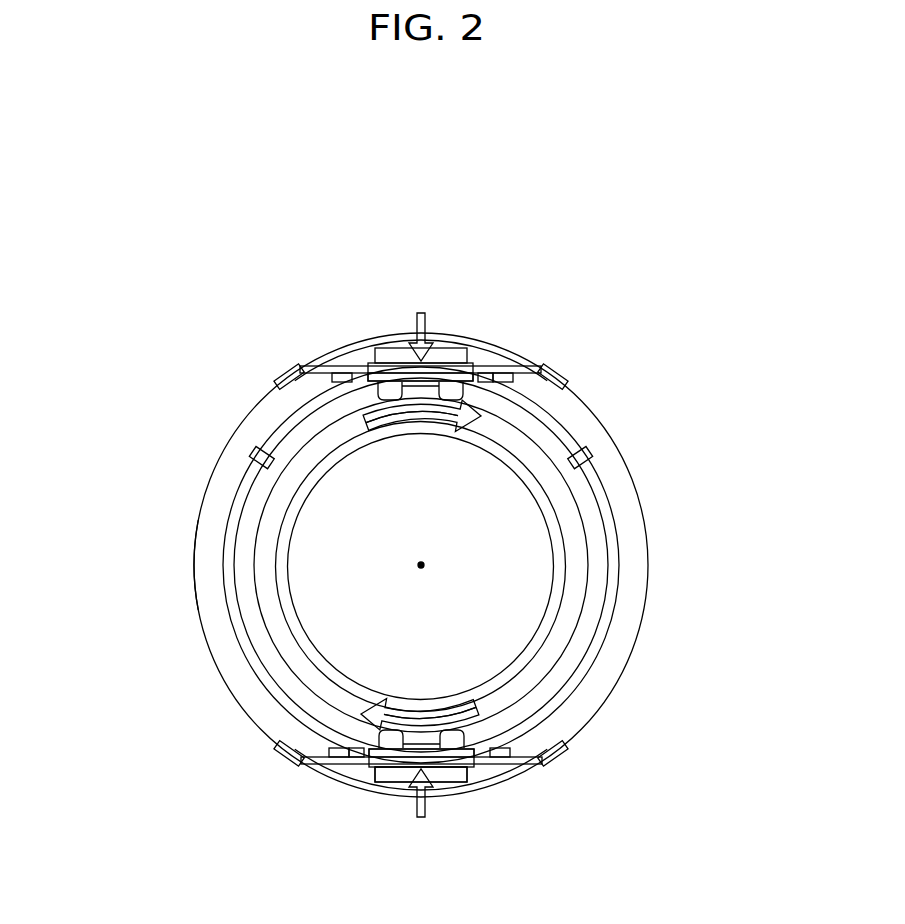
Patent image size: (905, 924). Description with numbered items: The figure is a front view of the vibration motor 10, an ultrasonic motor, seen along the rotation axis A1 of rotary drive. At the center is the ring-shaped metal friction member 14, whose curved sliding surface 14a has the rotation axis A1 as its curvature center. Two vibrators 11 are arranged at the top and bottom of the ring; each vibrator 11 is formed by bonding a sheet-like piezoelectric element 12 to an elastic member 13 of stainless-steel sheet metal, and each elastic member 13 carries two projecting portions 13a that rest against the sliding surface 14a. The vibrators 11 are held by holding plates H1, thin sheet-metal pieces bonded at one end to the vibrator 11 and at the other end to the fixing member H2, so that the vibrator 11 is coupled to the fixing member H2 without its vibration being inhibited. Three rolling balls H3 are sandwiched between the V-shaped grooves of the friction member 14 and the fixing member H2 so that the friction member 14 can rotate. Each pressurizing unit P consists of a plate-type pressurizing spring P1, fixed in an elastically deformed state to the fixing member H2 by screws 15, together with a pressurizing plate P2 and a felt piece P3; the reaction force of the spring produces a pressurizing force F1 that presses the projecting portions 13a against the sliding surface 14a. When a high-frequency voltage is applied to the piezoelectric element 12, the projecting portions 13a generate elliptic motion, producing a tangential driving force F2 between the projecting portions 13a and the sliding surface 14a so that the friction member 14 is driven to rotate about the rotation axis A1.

The vibration motor 10 is at (131, 279).
The vibrator 11 is at (104, 403).
The piezoelectric element 12 is at (350, 380).
The elastic member 13 is at (345, 395).
The projecting portion 13a is at (484, 410).
The friction member 14 is at (580, 550).
The sliding surface 14a is at (600, 518).
The screw 15 is at (283, 366).
The holding plate H1 is at (343, 360).
The fixing member H2 is at (214, 598).
The rolling ball H3 is at (255, 468).
The pressurizing spring P1 is at (405, 350).
The pressurizing plate P2 is at (452, 352).
The felt piece P3 is at (476, 367).
The pressurizing unit P is at (744, 778).
The pressurizing force F1 is at (433, 570).
The driving force F2 is at (395, 415).
The rotation axis A1 is at (408, 551).